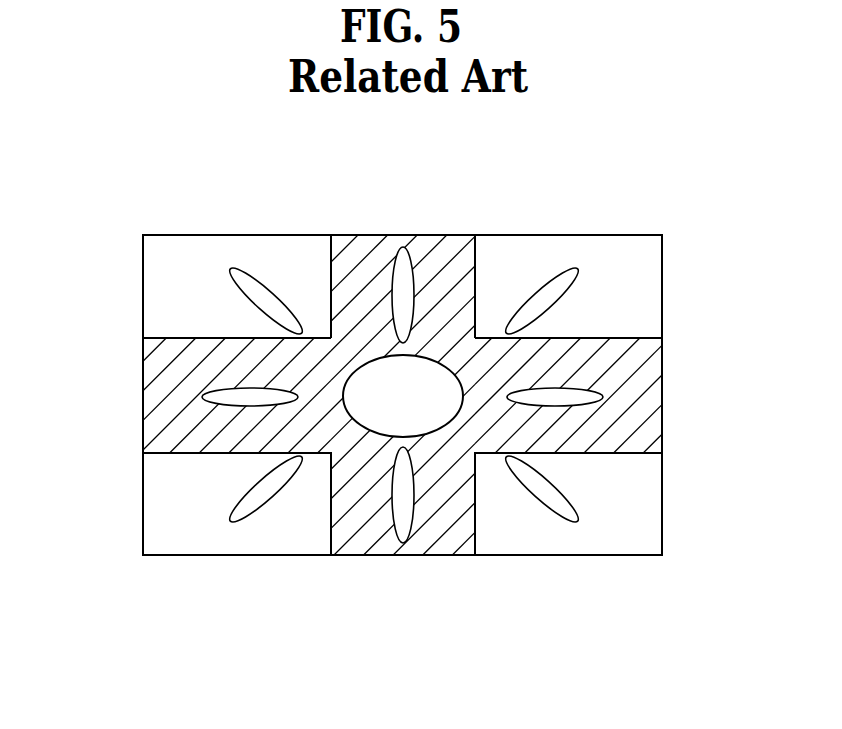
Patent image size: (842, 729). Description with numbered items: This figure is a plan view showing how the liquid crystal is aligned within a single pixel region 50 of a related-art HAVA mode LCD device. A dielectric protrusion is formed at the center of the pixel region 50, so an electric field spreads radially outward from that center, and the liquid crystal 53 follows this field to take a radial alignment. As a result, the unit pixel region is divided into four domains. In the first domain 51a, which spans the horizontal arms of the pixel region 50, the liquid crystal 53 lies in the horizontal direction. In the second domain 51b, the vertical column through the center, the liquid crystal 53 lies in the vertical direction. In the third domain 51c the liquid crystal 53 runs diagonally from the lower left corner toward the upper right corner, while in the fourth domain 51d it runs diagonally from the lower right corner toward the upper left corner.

The pixel region 50 is at (613, 235).
The first domain 51a is at (163, 393).
The second domain 51b is at (442, 520).
The third domain 51c is at (195, 520).
The fourth domain 51d is at (618, 520).
The liquid crystal 53 is at (547, 487).